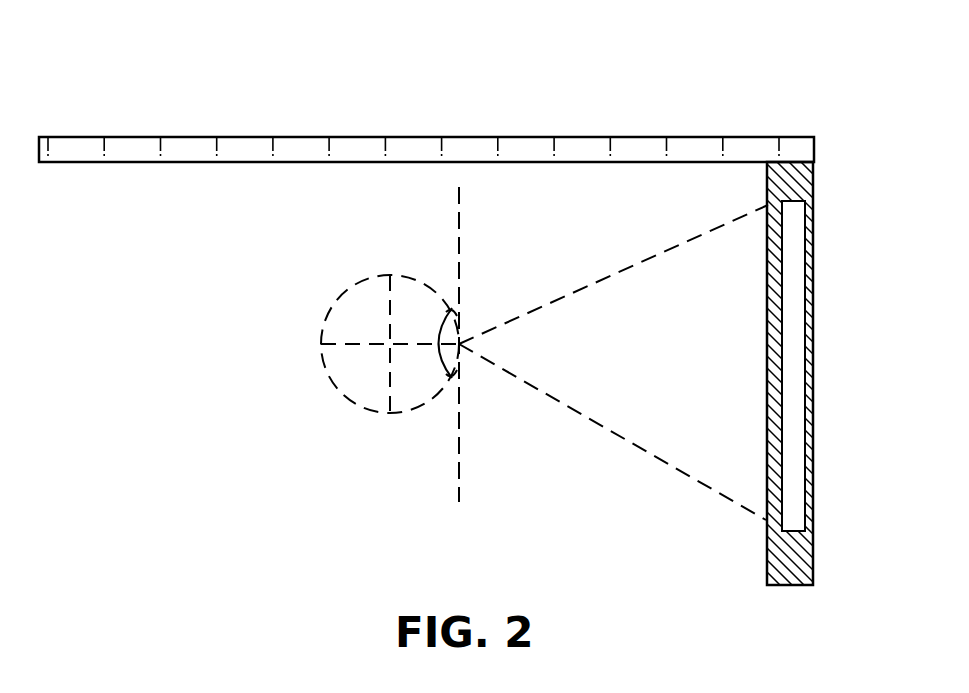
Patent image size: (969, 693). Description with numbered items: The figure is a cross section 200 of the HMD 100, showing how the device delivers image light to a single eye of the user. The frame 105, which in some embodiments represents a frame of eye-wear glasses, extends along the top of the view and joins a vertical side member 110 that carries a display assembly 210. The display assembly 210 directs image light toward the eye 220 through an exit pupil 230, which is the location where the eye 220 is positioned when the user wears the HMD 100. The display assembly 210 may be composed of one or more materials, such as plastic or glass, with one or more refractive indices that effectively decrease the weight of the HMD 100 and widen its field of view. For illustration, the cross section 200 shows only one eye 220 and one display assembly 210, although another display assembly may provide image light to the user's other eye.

The cross section 200 is at (69, 49).
The HMD 100 is at (494, 349).
The frame 105 is at (704, 131).
The housing wall 110 is at (824, 503).
The display assembly 210 is at (814, 255).
The eye 220 is at (339, 284).
The exit pupil 230 is at (451, 461).